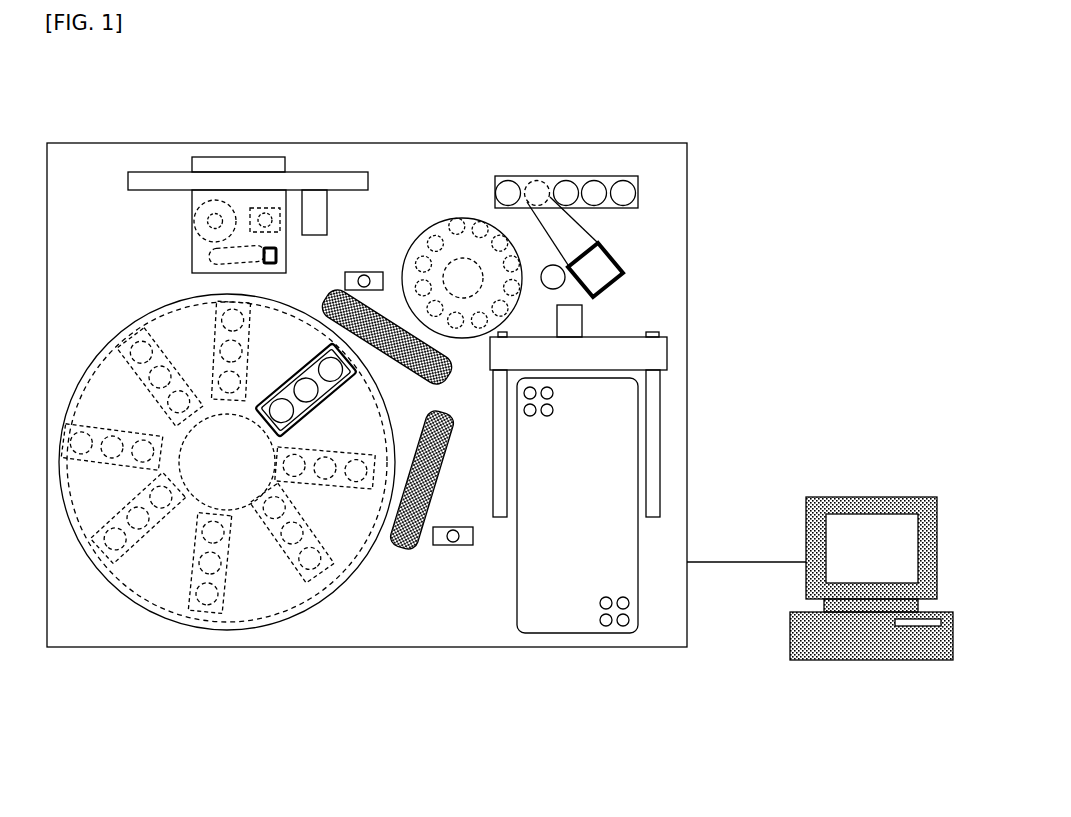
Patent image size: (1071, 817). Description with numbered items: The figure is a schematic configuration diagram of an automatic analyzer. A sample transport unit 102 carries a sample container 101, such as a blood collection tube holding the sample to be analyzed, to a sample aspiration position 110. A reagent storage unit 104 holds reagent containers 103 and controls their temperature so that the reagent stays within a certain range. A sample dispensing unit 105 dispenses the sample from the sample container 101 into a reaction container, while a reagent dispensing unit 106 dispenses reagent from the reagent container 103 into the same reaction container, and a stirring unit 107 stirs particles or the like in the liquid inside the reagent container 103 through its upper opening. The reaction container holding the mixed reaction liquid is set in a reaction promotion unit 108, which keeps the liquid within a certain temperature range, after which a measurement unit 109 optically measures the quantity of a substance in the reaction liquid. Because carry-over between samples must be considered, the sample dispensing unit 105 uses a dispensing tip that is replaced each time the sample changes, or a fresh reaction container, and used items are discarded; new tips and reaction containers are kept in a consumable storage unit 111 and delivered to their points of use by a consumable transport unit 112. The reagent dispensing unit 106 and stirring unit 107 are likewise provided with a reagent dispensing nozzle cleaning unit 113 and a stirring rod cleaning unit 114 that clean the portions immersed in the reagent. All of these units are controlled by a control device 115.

The sample container 101 is at (576, 185).
The sample transport unit 102 is at (615, 175).
The reagent container 103 is at (225, 583).
The reagent storage unit 104 is at (198, 632).
The sample dispensing unit 105 is at (572, 233).
The reagent dispensing unit 106 is at (392, 338).
The stirring unit 107 is at (407, 517).
The reaction promotion unit 108 is at (462, 228).
The measurement unit 109 is at (214, 163).
The sample aspiration position 110 is at (535, 188).
The consumable storage unit 111 is at (630, 567).
The consumable transport unit 112 is at (632, 355).
The reagent dispensing nozzle cleaning unit 113 is at (365, 273).
The stirring rod cleaning unit 114 is at (453, 542).
The control device 115 is at (882, 660).